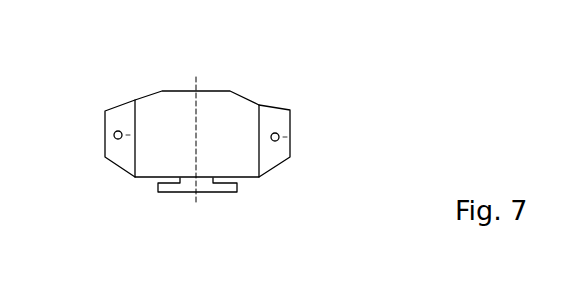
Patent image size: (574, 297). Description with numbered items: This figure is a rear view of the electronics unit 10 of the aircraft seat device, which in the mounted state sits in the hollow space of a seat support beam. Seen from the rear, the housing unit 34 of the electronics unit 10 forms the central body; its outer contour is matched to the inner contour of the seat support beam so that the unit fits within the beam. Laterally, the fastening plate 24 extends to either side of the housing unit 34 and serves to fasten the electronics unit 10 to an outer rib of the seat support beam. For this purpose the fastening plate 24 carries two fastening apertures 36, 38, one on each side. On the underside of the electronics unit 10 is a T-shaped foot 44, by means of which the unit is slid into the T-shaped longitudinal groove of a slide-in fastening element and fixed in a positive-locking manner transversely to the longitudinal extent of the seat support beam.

The electronics unit 10 is at (237, 82).
The fastening plate 24 is at (123, 103).
The housing unit 34 is at (177, 88).
The fastening aperture 36 is at (274, 111).
The fastening aperture 38 is at (117, 140).
The T-shaped foot 44 is at (167, 192).